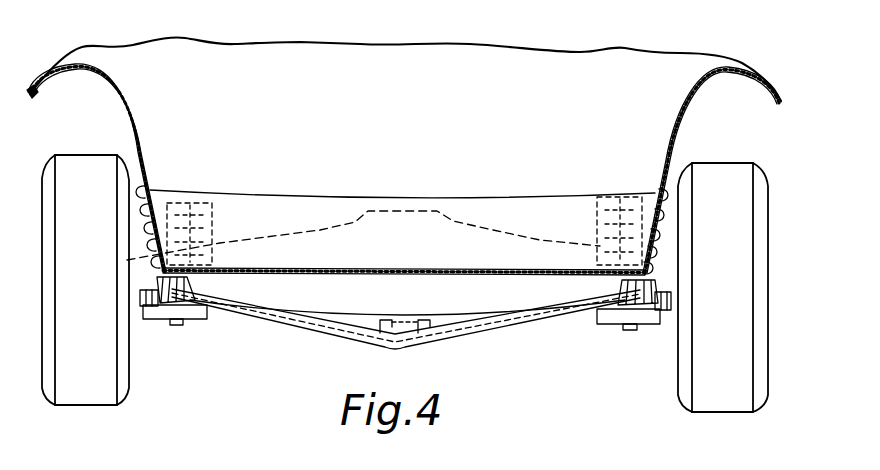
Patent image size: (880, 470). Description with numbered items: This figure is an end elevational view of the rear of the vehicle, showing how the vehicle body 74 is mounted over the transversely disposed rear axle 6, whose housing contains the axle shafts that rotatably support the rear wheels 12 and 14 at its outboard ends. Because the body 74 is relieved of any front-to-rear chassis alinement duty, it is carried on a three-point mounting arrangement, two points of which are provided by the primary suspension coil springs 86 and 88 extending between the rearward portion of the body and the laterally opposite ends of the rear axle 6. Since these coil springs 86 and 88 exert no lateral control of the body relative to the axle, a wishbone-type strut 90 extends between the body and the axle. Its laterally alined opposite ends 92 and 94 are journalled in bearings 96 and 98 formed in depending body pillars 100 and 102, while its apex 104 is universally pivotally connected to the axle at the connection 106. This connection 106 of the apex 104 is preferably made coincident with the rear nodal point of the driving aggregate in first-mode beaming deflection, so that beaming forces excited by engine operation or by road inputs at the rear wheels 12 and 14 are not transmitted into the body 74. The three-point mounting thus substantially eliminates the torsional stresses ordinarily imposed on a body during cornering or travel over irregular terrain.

The rear axle 6 is at (515, 233).
The rear wheel 12 is at (752, 420).
The rear wheel 14 is at (97, 410).
The vehicle body 74 is at (697, 109).
The primary suspension coil spring 86 is at (582, 248).
The primary suspension coil spring 88 is at (205, 212).
The wishbone-type strut 90 is at (406, 329).
The strut end 92 is at (652, 325).
The strut end 94 is at (163, 320).
The bearing 96 is at (672, 310).
The bearing 98 is at (140, 305).
The depending body pillar 100 is at (585, 292).
The depending body pillar 102 is at (195, 282).
The apex 104 is at (422, 346).
The universal pivotal connection 106 is at (408, 318).